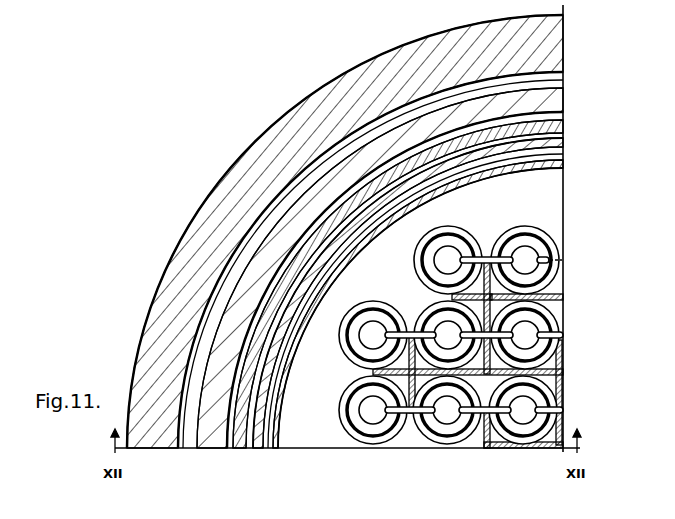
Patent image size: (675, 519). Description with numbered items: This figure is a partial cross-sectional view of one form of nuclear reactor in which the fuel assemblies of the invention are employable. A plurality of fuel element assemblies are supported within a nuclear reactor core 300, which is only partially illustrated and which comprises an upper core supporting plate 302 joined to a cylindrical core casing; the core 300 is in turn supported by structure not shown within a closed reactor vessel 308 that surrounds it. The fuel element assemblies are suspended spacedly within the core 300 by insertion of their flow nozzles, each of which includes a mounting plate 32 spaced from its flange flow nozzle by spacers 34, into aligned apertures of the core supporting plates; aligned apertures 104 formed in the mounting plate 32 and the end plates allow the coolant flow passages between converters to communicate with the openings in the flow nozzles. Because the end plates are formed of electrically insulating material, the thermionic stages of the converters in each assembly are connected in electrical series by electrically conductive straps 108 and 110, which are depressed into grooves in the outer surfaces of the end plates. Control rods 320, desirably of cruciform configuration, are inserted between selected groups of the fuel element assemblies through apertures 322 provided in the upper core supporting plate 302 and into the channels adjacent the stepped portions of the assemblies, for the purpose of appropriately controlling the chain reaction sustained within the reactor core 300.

The reactor vessel 308 is at (203, 233).
The upper core supporting plate 302 is at (535, 202).
The nuclear reactor core 300 is at (393, 276).
The control rods 320 is at (452, 297).
The apertures 322 is at (505, 306).
The electrically conductive strap 108 is at (373, 372).
The electrically conductive strap 110 is at (487, 244).
The spacers 34 is at (448, 424).
The aligned apertures 104 is at (457, 438).
The mounting plate 32 is at (515, 433).